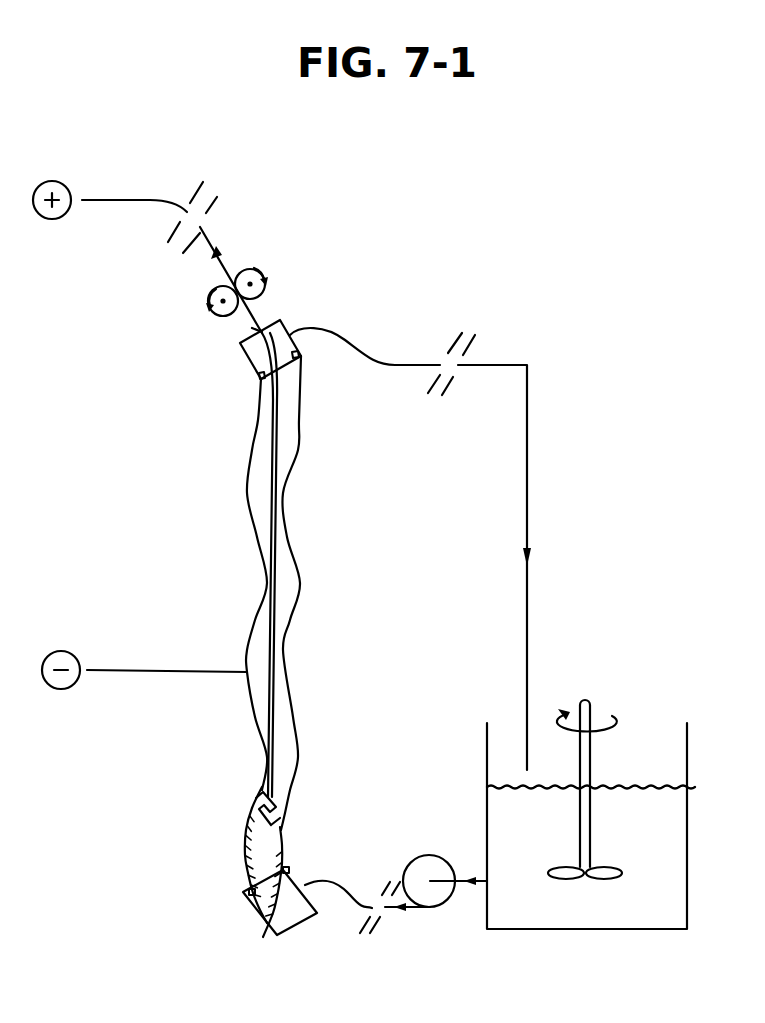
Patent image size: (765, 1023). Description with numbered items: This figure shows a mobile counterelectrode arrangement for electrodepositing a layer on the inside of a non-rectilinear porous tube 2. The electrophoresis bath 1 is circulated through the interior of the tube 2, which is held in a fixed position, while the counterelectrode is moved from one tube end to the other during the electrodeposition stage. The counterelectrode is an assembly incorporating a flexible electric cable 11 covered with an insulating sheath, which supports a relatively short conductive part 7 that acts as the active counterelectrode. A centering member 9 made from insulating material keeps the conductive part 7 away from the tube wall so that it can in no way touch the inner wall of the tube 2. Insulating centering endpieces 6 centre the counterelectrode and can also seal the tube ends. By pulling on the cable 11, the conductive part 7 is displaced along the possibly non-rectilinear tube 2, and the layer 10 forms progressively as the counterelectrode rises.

The electrophoresis bath 1 is at (498, 807).
The tube 2 is at (300, 583).
The insulating centering endpiece 6 is at (252, 357).
The conductive part 7 is at (250, 822).
The centering member 9 is at (265, 790).
The layer 10 is at (272, 915).
The flexible electric cable 11 is at (273, 541).